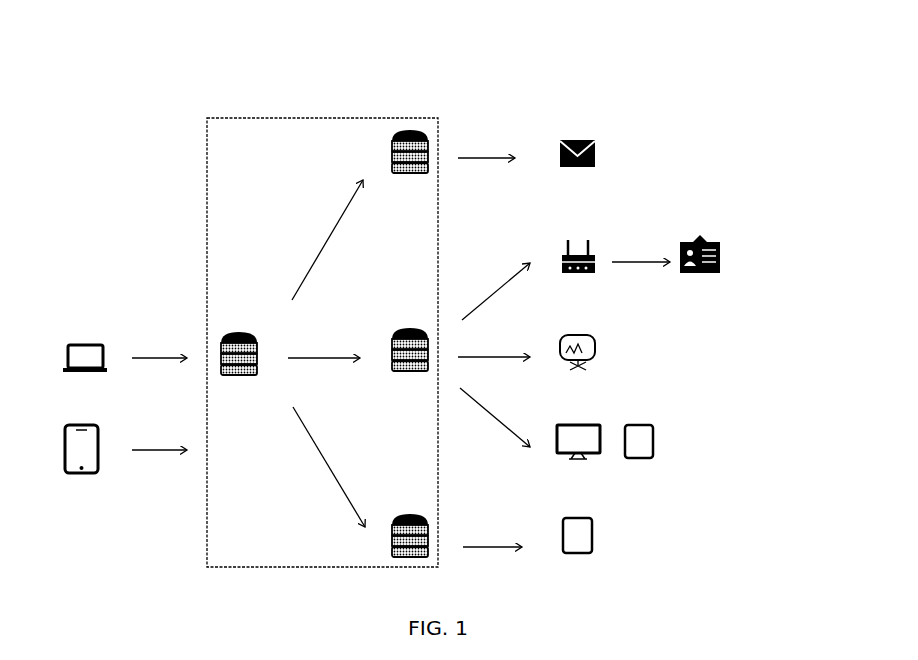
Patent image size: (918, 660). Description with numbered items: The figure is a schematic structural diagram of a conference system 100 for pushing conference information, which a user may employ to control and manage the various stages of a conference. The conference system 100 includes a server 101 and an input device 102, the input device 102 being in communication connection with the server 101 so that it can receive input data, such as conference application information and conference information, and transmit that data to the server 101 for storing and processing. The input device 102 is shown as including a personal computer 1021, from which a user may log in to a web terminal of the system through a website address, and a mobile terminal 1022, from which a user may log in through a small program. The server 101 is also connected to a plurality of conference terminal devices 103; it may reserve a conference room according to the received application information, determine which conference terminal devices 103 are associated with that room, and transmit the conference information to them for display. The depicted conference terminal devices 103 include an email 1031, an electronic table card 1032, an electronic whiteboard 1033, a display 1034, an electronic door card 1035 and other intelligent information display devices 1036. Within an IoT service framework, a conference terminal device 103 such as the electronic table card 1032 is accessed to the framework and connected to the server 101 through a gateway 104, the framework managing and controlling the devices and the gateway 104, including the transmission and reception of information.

The conference system 100 is at (67, 40).
The server 101 is at (395, 117).
The input device 102 is at (87, 332).
The personal computer 1021 is at (85, 372).
The mobile terminal 1022 is at (81, 463).
The conference terminal devices 103 is at (733, 148).
The email 1031 is at (577, 167).
The electronic table card 1032 is at (700, 268).
The electronic whiteboard 1033 is at (579, 366).
The display 1034 is at (578, 456).
The electronic door card 1035 is at (640, 456).
The other intelligent information display devices 1036 is at (579, 548).
The gateway 104 is at (578, 271).